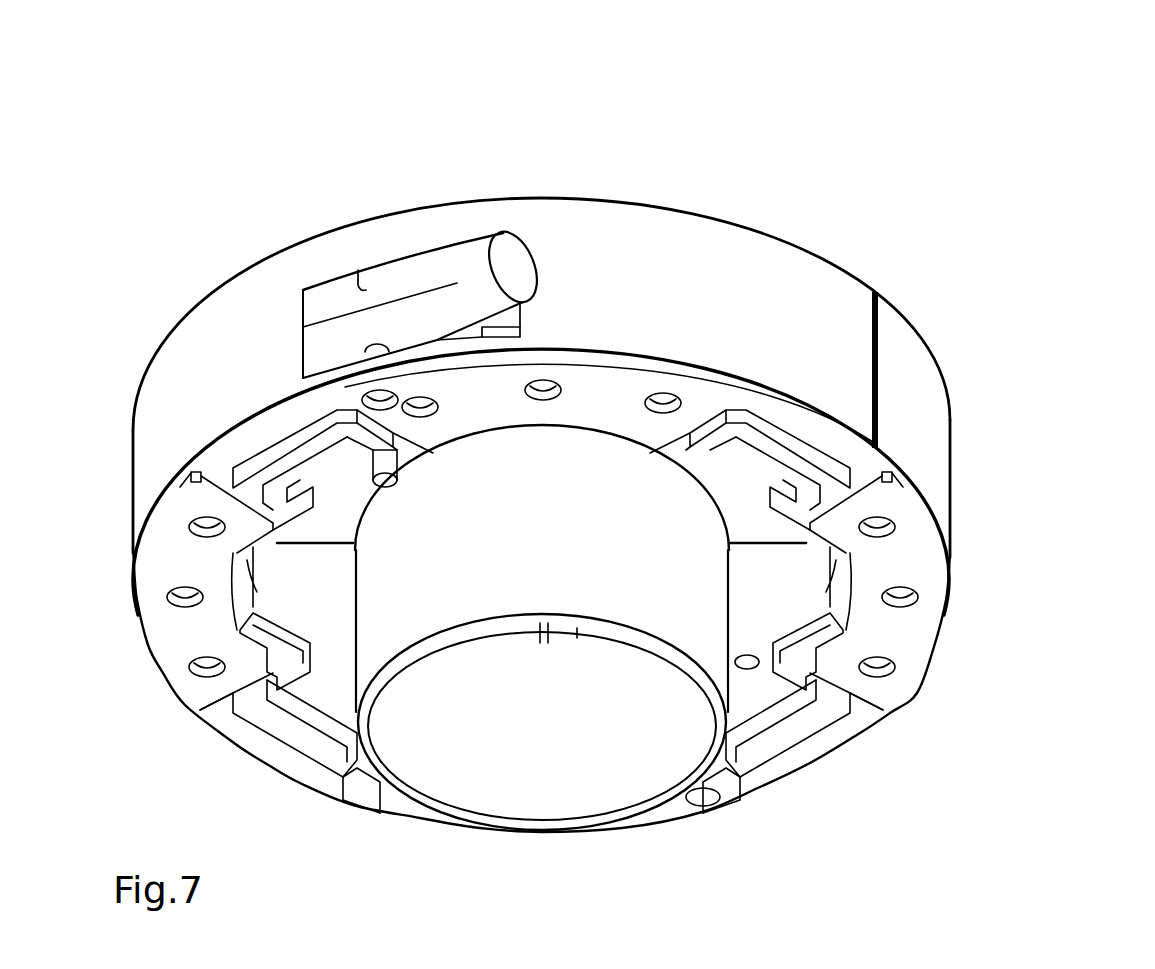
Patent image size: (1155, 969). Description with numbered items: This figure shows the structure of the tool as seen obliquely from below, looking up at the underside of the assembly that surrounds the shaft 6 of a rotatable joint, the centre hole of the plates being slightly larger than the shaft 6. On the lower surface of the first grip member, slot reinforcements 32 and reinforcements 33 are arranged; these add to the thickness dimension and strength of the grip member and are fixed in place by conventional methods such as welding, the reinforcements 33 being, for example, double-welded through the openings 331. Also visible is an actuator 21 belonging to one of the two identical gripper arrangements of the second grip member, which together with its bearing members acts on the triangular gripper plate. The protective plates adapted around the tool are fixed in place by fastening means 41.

The shaft 6 is at (483, 752).
The actuator 21 is at (437, 287).
The slot reinforcement 32 is at (750, 433).
The reinforcement 33 is at (900, 512).
The opening 331 is at (877, 678).
The fastening means 41 is at (878, 390).